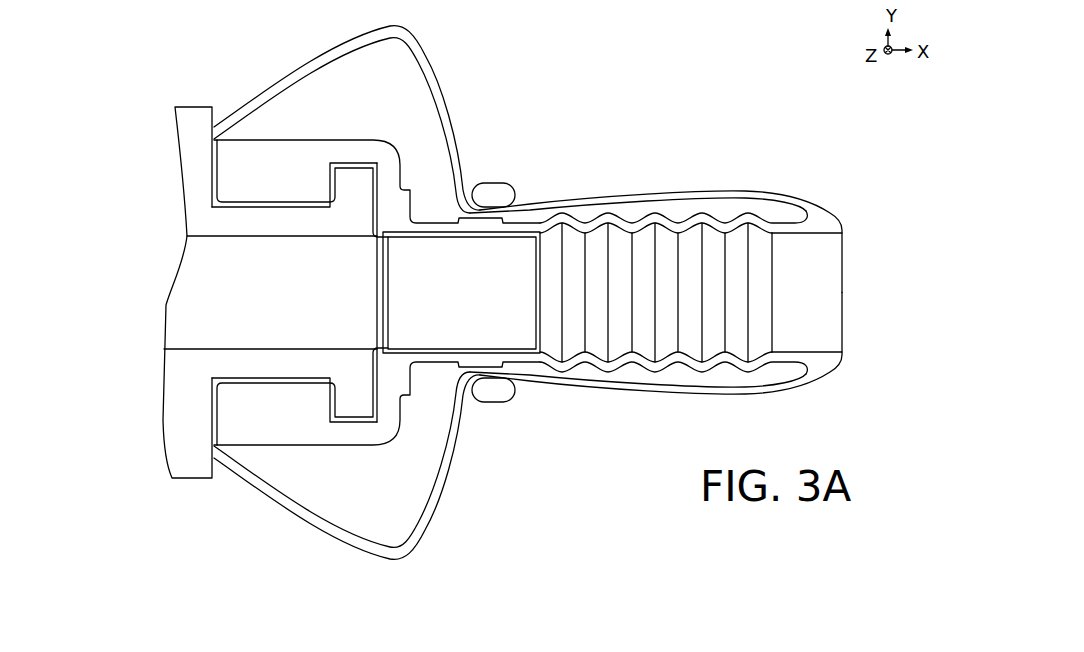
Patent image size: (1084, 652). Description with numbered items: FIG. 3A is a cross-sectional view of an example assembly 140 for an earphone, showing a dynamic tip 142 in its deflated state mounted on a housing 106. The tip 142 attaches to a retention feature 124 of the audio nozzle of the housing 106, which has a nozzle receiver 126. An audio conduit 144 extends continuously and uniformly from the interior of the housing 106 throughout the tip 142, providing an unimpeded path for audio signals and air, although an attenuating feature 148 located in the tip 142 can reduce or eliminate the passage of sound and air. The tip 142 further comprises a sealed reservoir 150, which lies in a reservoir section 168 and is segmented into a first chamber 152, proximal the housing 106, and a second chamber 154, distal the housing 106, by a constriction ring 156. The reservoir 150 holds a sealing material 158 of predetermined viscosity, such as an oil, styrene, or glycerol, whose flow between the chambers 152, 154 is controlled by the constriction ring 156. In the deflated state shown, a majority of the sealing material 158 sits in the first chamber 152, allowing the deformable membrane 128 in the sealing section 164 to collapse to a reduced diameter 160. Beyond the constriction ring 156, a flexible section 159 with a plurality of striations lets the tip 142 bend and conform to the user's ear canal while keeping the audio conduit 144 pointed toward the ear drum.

The housing 106 is at (200, 374).
The retention feature 124 is at (306, 232).
The nozzle receiver 126 is at (291, 184).
The deformable membrane 128 is at (444, 94).
The assembly 140 is at (133, 35).
The tip 142 is at (585, 110).
The audio conduit 144 is at (848, 300).
The attenuating feature 148 is at (477, 304).
The sealed reservoir 150 is at (452, 176).
The first chamber 152 is at (280, 100).
The second chamber 154 is at (717, 203).
The constriction ring 156 is at (513, 184).
The sealing material 158 is at (384, 112).
The flexible section 159 is at (775, 261).
The reduced diameter 160 is at (950, 398).
The sealing section 164 is at (766, 190).
The reservoir section 168 is at (306, 52).